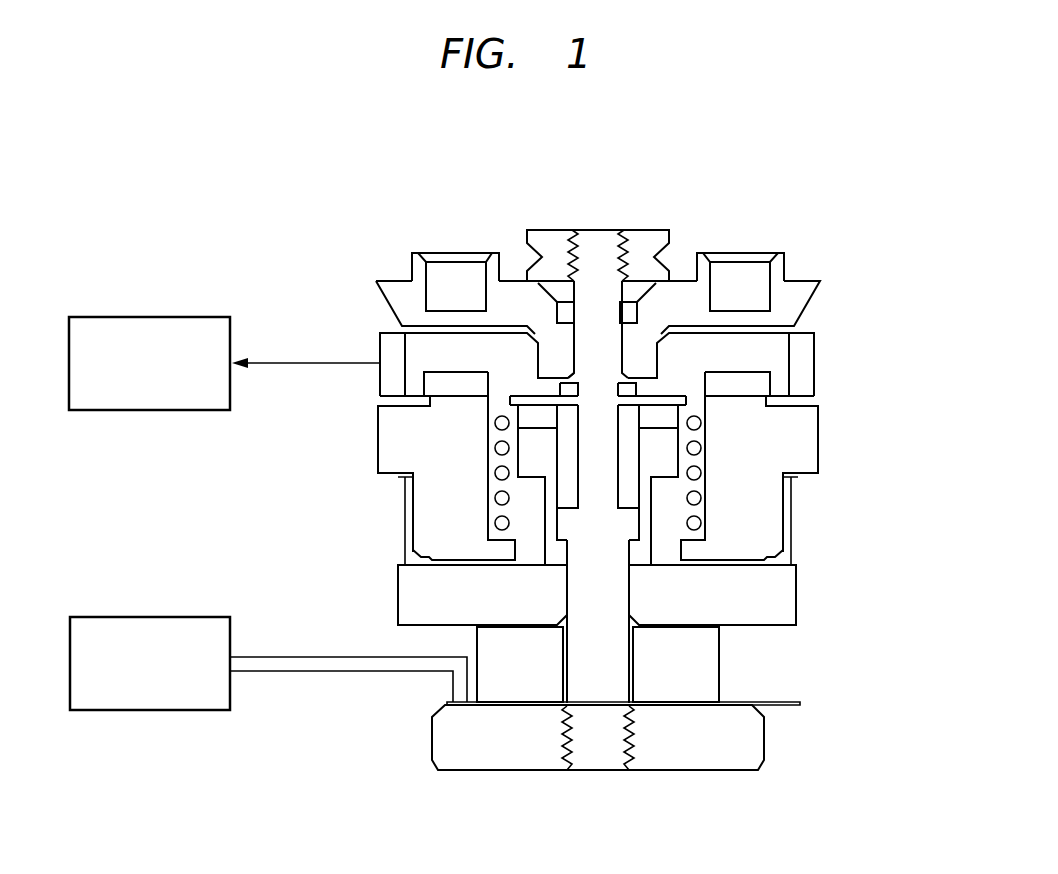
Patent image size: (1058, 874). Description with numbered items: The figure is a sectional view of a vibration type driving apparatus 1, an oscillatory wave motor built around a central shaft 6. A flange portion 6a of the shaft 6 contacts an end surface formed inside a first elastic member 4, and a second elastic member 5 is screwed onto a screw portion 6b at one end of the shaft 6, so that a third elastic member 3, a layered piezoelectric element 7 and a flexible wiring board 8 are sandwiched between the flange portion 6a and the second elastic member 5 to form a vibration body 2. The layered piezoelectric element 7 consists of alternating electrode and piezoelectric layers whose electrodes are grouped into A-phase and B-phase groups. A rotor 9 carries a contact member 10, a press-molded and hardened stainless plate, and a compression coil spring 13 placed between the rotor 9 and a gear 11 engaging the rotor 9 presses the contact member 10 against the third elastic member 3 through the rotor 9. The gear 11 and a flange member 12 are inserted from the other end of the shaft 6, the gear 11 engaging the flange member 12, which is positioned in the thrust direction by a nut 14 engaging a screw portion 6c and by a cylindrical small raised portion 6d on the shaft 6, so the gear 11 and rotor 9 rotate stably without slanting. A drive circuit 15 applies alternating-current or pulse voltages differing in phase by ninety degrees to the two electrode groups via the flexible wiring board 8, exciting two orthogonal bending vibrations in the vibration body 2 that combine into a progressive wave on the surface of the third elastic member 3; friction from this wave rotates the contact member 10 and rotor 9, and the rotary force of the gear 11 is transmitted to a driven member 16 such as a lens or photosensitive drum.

The vibration type driving apparatus 1 is at (752, 240).
The vibration body 2 is at (885, 592).
The third elastic member 3 is at (780, 604).
The first elastic member 4 is at (645, 513).
The second elastic member 5 is at (752, 740).
The shaft 6 is at (603, 747).
The flange portion 6a is at (565, 520).
The screw portion 6b is at (570, 747).
The screw portion 6c is at (580, 232).
The cylindrical small raised portion 6d is at (573, 375).
The layered piezoelectric element 7 is at (705, 667).
The flexible wiring board 8 is at (800, 703).
The rotor 9 is at (797, 463).
The contact member 10 is at (787, 547).
The gear 11 is at (803, 361).
The flange member 12 is at (783, 258).
The compression coil spring 13 is at (697, 448).
The nut 14 is at (648, 237).
The drive circuit 15 is at (190, 712).
The driven member 16 is at (188, 316).